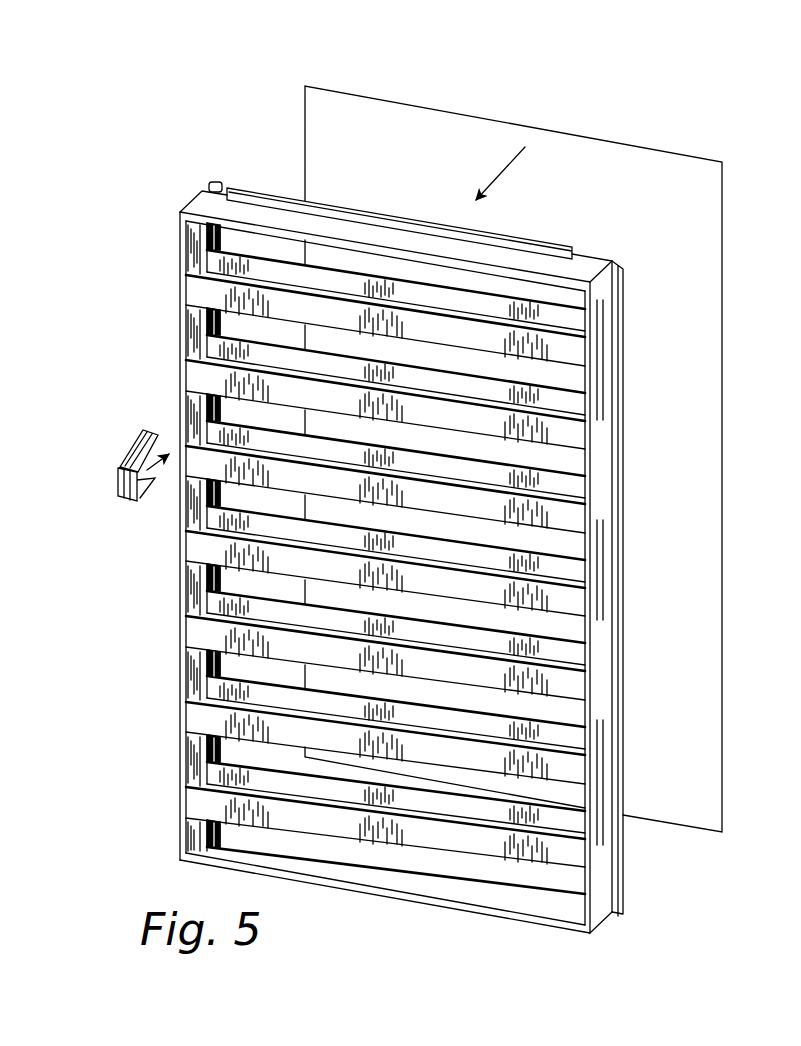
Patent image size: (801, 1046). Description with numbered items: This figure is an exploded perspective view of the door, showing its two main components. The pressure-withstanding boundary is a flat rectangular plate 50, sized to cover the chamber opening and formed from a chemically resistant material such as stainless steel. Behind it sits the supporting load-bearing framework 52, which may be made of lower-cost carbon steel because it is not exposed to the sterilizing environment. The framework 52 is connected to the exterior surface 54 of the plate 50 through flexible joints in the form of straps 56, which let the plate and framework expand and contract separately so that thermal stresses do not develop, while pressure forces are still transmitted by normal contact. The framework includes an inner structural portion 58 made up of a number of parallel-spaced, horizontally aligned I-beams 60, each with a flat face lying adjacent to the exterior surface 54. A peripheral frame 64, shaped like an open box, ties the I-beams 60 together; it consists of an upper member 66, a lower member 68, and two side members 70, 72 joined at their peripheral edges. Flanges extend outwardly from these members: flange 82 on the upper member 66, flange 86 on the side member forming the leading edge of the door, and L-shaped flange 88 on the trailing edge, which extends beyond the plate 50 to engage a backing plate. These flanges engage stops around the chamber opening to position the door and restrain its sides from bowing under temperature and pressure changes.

The flat rectangular plate 50 is at (733, 205).
The framework 52 is at (172, 763).
The exterior surface 54 is at (688, 296).
The straps 56 is at (121, 436).
The inner structural portion 58 is at (292, 262).
The I-beams 60 is at (200, 372).
The peripheral frame 64 is at (602, 913).
The upper member 66 is at (200, 204).
The lower member 68 is at (448, 915).
The side member 70 is at (183, 730).
The side member 72 is at (601, 838).
The flange 82 is at (355, 212).
The flange 86 is at (627, 566).
The flange 88 is at (221, 181).